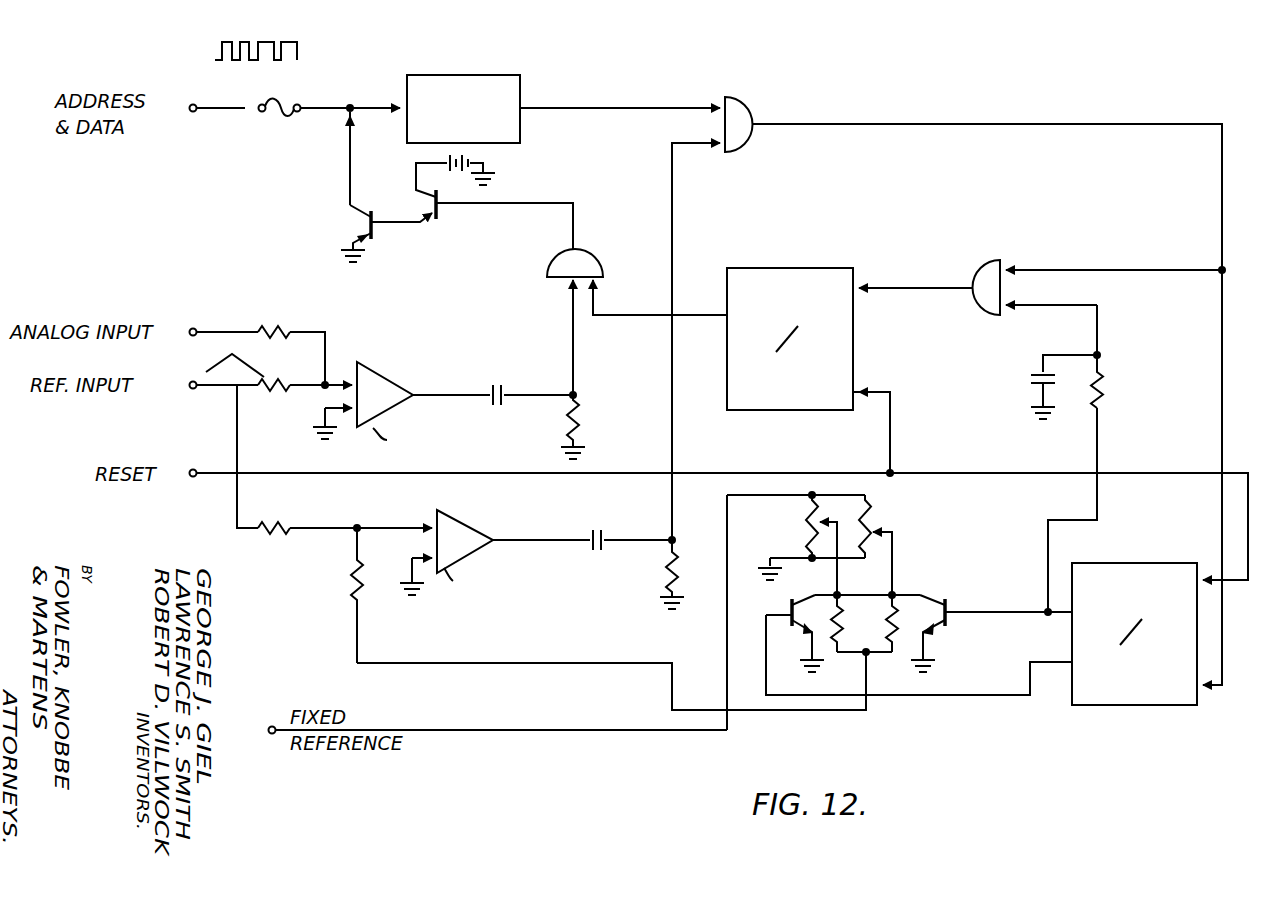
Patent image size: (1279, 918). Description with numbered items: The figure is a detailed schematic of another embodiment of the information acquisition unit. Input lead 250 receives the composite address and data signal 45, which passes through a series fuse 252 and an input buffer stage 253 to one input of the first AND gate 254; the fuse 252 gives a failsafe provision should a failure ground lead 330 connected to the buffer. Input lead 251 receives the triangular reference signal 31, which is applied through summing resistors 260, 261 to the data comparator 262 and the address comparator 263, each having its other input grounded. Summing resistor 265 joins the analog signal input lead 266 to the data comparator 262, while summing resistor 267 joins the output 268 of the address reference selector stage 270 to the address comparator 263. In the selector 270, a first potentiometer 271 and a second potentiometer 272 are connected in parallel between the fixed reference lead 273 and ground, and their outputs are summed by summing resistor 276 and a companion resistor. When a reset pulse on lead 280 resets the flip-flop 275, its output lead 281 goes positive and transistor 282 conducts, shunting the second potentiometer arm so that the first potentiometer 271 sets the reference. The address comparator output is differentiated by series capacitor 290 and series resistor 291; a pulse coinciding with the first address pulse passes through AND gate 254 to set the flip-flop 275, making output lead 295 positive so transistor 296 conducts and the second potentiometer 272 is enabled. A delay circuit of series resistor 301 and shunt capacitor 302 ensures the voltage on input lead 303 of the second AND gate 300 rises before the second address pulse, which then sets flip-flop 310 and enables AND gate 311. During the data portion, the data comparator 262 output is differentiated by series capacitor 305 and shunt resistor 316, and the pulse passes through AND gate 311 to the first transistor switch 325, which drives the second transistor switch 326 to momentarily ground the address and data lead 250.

The composite address and data signal 45 is at (239, 36).
The address and data input lead 250 is at (245, 106).
The fuse 252 is at (270, 104).
The lead 330 is at (395, 106).
The input buffer stage 253 is at (470, 75).
The first AND gate 254 is at (743, 100).
The second transistor switch 326 is at (364, 221).
The first transistor switch 325 is at (440, 220).
The AND gate 311 is at (590, 258).
The flip-flop 310 is at (795, 268).
The second AND gate 300 is at (980, 311).
The AND gate input lead 303 is at (1054, 305).
The shunt capacitor 302 is at (1030, 380).
The series resistor 301 is at (1102, 390).
The analog signal input lead 266 is at (228, 331).
The summing resistor 265 is at (283, 328).
The triangular reference signal 31 is at (248, 352).
The input lead 251 is at (210, 388).
The summing resistor 260 is at (264, 389).
The data comparator 262 is at (385, 381).
The series capacitor 305 is at (493, 385).
The shunt resistor 316 is at (580, 420).
The reset lead 280 is at (275, 473).
The summing resistor 261 is at (289, 525).
The address comparator 263 is at (478, 503).
The series capacitor 290 is at (595, 531).
The series resistor 291 is at (665, 584).
The summing resistor 267 is at (352, 582).
The output 268 is at (357, 632).
The second potentiometer 272 is at (807, 521).
The first potentiometer 271 is at (870, 518).
The transistor 282 is at (790, 614).
The summing resistor 276 is at (872, 623).
The address reference selector stage 270 is at (928, 588).
The transistor 296 is at (962, 626).
The output lead 295 is at (1028, 610).
The output lead 281 is at (940, 697).
The flip-flop 275 is at (1098, 706).
The fixed reference lead 273 is at (437, 730).